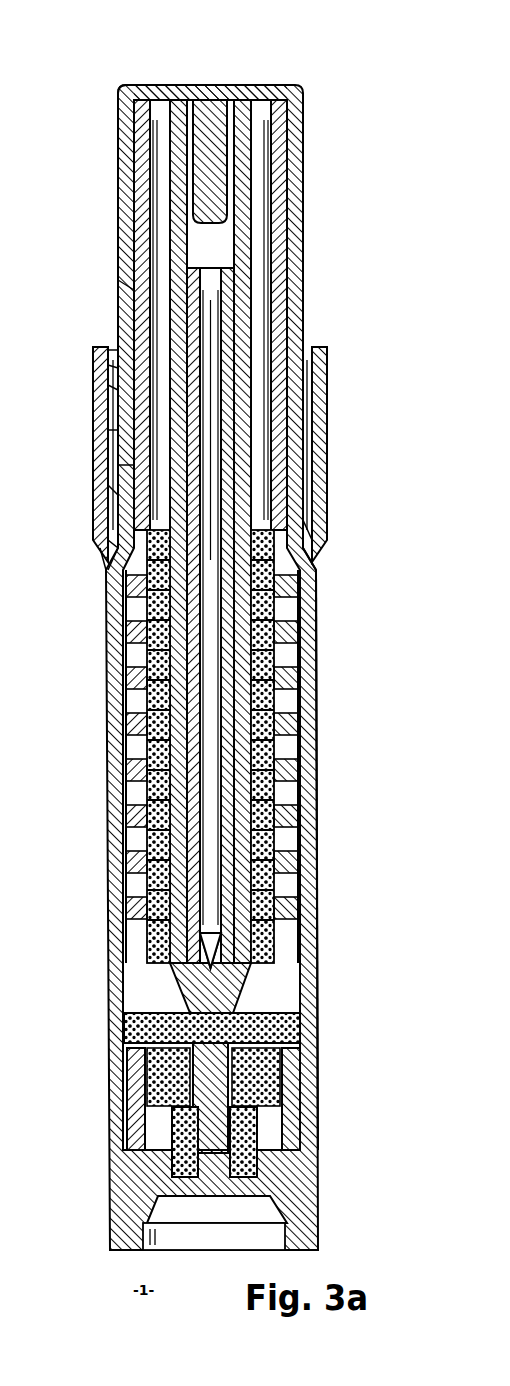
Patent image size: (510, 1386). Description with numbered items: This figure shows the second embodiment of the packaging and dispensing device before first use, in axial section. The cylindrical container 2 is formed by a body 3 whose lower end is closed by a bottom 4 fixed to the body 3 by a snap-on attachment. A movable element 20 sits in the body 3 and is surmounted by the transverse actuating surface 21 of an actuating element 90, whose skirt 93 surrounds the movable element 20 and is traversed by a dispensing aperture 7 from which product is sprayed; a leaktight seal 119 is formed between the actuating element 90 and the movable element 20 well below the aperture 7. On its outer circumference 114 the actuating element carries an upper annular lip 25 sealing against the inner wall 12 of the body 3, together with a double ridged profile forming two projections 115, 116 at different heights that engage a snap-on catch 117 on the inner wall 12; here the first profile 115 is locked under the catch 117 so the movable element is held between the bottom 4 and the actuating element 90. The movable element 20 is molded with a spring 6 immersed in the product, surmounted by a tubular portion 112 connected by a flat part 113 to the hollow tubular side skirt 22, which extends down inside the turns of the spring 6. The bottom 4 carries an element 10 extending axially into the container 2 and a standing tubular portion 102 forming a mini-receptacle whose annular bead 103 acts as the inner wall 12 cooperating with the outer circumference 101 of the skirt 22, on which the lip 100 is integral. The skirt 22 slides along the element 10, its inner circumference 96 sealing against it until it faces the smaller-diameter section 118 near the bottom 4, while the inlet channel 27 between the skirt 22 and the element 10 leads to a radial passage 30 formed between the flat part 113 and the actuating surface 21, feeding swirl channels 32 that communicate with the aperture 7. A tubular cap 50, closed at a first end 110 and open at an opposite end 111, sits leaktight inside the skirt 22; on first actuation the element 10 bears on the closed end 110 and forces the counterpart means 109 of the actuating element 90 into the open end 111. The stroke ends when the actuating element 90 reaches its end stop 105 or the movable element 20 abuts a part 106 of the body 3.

The container 2 is at (272, 735).
The body 3 is at (328, 410).
The bottom 4 is at (300, 1232).
The spring 6 is at (287, 695).
The dispensing aperture 7 is at (133, 172).
The element 10 is at (235, 1088).
The inner wall 12 is at (100, 487).
The movable element 20 is at (285, 608).
The transverse actuating surface 21 is at (253, 92).
The hollow tubular side skirt 22 is at (150, 832).
The upper annular lip 25 is at (313, 573).
The inlet channel 27 is at (200, 242).
The radial passage 30 is at (167, 103).
The swirl channels 32 is at (137, 190).
The cap 50 is at (234, 322).
The actuating element 90 is at (292, 213).
The skirt 93 is at (306, 132).
The inner circumference of the skirt 96 is at (232, 893).
The lip 100 is at (182, 972).
The outer circumference of the skirt 101 is at (125, 757).
The tubular portion 102 is at (135, 1128).
The annular bead 103 is at (175, 1042).
The end stop 105 is at (112, 432).
The part of the body 106 is at (303, 532).
The counterpart means 109 is at (212, 165).
The first closed end 110 is at (240, 1010).
The open end 111 is at (226, 268).
The tubular portion 112 is at (127, 468).
The flat part 113 is at (122, 92).
The outer circumference 114 is at (120, 285).
The first annular profile 115 is at (112, 392).
The second annular profile 116 is at (113, 350).
The snap-on catch 117 is at (105, 368).
The smaller-diameter section 118 is at (258, 1125).
The leaktight seal 119 is at (110, 555).